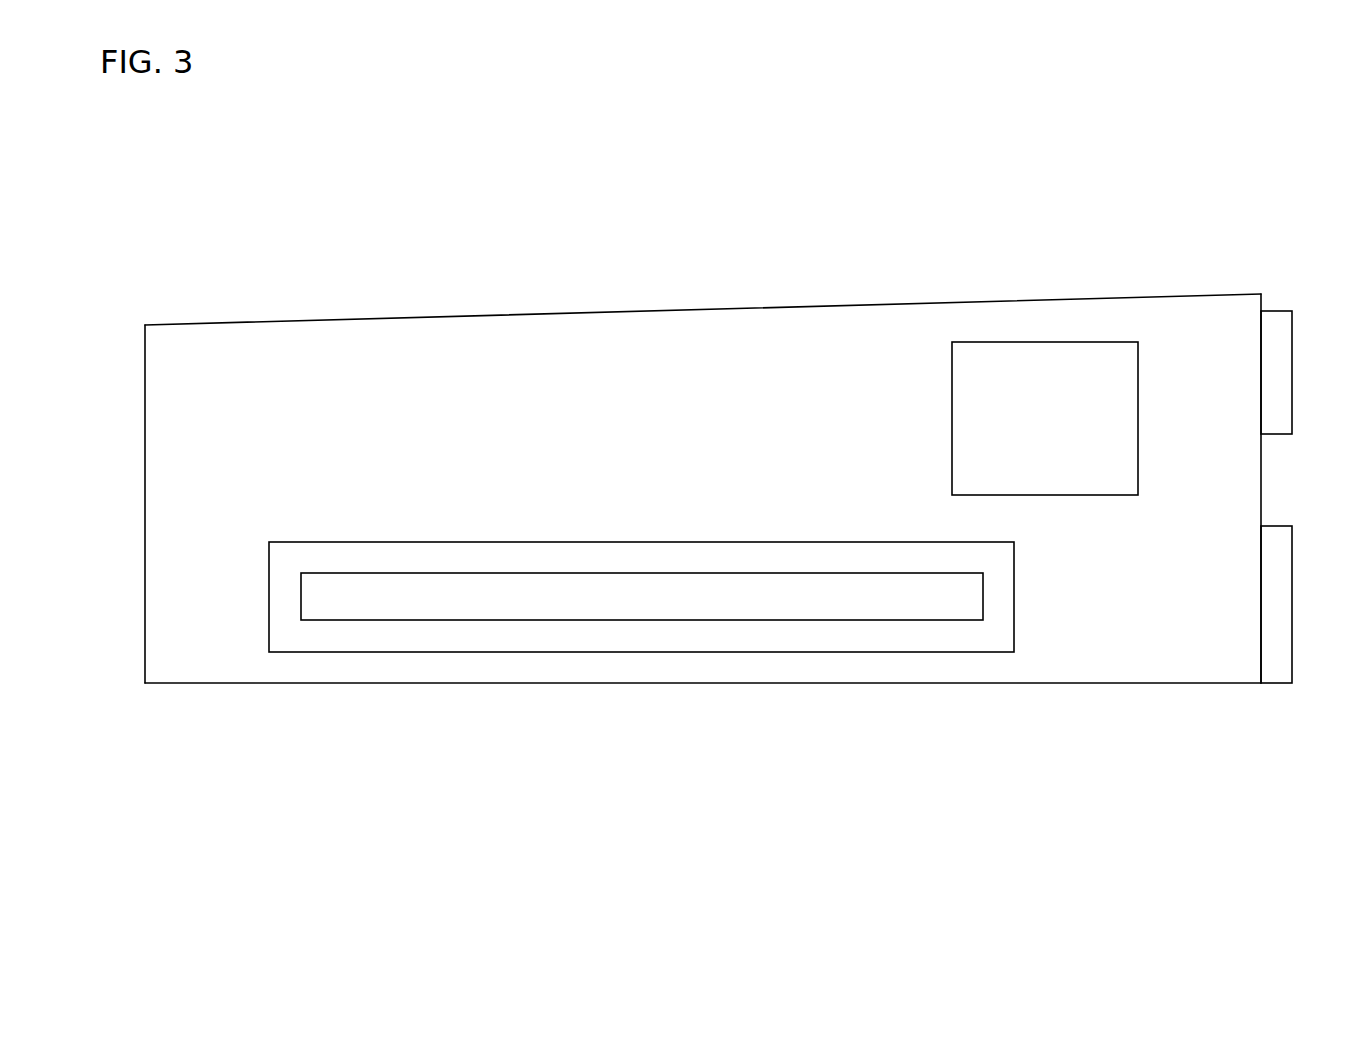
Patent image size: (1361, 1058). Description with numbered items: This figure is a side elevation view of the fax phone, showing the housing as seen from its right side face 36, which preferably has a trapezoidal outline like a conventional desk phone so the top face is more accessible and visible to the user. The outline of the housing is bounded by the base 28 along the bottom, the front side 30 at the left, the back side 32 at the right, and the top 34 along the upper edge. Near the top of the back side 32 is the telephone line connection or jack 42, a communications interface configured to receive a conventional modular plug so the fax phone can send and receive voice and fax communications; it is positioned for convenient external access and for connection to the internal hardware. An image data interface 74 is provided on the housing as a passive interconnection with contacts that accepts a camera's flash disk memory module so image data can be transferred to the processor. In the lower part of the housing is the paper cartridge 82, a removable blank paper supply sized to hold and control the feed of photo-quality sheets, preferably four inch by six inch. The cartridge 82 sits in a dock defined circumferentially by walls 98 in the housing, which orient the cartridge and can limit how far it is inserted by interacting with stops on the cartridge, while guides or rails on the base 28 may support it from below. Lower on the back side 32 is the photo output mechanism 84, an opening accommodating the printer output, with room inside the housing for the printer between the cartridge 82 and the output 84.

The base 28 is at (300, 683).
The front side 30 is at (712, 492).
The back side 32 is at (1262, 488).
The top 34 is at (300, 325).
The right side face 36 is at (746, 492).
The telephone line connection or jack 42 is at (1292, 340).
The image data interface 74 is at (1045, 373).
The paper cartridge 82 is at (518, 587).
The photo output mechanism 84 is at (1292, 648).
The walls 98 is at (1015, 588).